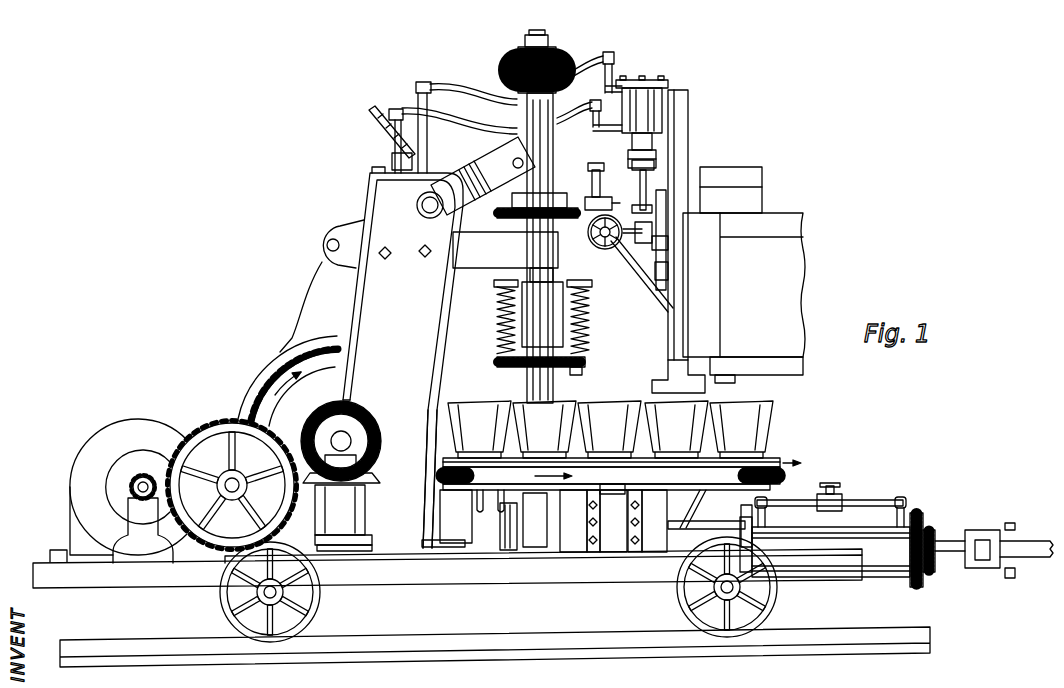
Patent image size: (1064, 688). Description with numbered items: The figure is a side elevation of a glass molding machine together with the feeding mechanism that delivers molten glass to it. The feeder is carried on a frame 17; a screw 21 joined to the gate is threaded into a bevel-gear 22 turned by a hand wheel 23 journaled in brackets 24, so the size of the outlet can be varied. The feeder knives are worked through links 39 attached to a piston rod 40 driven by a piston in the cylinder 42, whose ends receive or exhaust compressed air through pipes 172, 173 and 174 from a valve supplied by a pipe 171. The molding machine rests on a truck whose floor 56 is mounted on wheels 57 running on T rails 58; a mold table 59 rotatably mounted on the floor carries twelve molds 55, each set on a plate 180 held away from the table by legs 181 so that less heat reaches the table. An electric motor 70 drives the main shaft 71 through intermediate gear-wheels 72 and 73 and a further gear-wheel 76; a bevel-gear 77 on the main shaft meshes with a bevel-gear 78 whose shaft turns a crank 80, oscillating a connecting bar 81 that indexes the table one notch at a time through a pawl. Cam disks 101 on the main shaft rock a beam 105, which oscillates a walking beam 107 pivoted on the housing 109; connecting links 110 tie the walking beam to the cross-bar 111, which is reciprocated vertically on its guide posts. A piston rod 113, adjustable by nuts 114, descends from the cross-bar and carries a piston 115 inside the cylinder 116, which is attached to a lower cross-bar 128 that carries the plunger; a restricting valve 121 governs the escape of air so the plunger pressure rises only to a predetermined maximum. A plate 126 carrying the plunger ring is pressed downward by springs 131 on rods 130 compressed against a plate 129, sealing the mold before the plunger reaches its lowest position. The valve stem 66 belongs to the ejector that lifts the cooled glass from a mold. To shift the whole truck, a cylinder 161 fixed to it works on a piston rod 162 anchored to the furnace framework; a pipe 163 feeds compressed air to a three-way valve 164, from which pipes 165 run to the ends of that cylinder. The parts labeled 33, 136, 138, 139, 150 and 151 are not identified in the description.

The frame 17 is at (688, 128).
The screw 21 is at (670, 262).
The bevel-gear 22 is at (667, 240).
The hand wheel 23 is at (605, 250).
The brackets 24 is at (640, 270).
The upper collar flange 33 is at (490, 270).
The links 39 is at (650, 185).
The piston rod 40 is at (634, 153).
The cylinder 42 is at (665, 105).
The mold 55 is at (600, 400).
The floor 56 is at (466, 573).
The wheels 57 is at (322, 600).
The T rails 58 is at (650, 632).
The mold table 59 is at (478, 495).
The valve stem 66 is at (540, 510).
The electric motor 70 is at (150, 389).
The main shaft 71 is at (346, 436).
The gear-wheel 72 is at (128, 475).
The gear-wheel 73 is at (172, 443).
The gear-wheel 76 is at (290, 358).
The bevel-gear 77 is at (348, 400).
The bevel-gear 78 is at (364, 490).
The crank 80 is at (364, 538).
The connecting bar 81 is at (398, 557).
The cam disks 101 is at (252, 381).
The beam 105 is at (304, 284).
The walking beam 107 is at (372, 222).
The housing 109 is at (435, 358).
The connecting links 110 is at (520, 137).
The cross-bar 111 is at (558, 74).
The piston rod 113 is at (549, 135).
The nuts 114 is at (520, 43).
The piston 115 is at (508, 115).
The cylinder 116 is at (522, 236).
The valve 121 is at (591, 196).
The plate 126 is at (584, 363).
The cross-bar 128 is at (516, 361).
The plate 129 is at (497, 290).
The rods 130 is at (498, 318).
The springs 131 is at (498, 337).
The support block 136 is at (610, 560).
The support block 138 is at (655, 560).
The support block 139 is at (575, 565).
The bracket 150 is at (612, 485).
The brace 151 is at (705, 497).
The cylinder 161 is at (890, 575).
The piston rod 162 is at (949, 544).
The pipe 163 is at (840, 492).
The three-way valve 164 is at (832, 483).
The pipes 165 is at (760, 497).
The pipe 171 is at (426, 163).
The pipe 172 is at (395, 141).
The pipe 173 is at (425, 128).
The pipe 174 is at (503, 67).
The plates 180 is at (443, 460).
The legs 181 is at (443, 477).